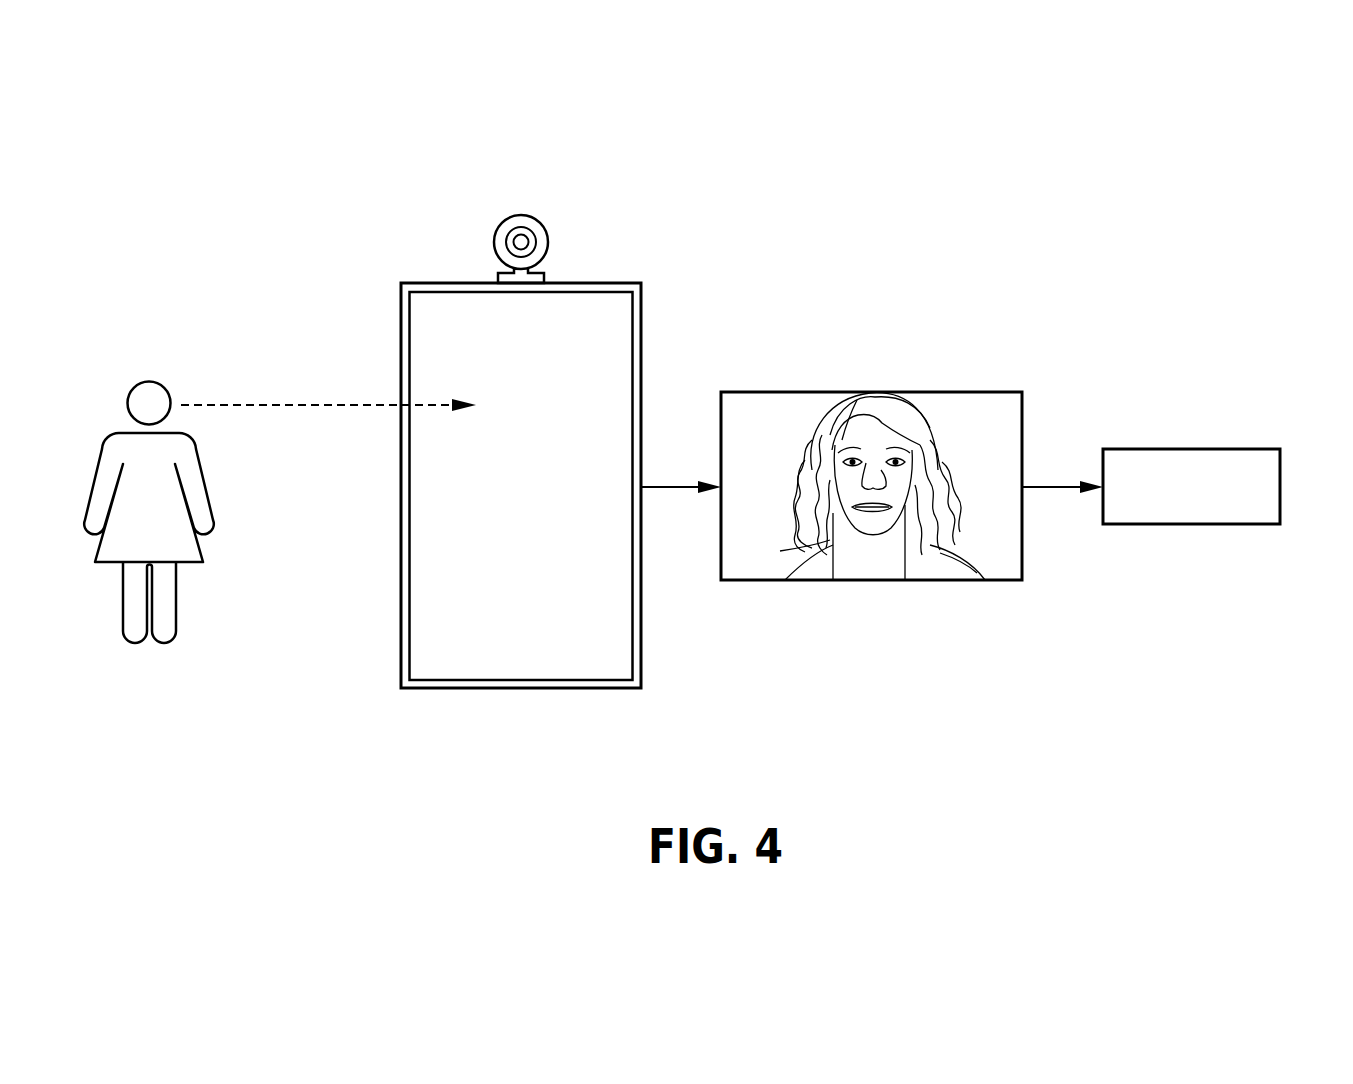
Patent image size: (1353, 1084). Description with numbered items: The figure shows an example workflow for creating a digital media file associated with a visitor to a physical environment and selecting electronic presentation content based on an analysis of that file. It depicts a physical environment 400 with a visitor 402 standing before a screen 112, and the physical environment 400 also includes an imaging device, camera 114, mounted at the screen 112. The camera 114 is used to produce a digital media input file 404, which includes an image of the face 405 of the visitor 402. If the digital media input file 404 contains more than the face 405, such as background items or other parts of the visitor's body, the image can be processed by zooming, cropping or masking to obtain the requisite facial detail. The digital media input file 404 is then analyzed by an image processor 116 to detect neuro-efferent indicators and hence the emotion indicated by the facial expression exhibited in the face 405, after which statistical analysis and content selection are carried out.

The physical environment 400 is at (182, 200).
The visitor 402 is at (148, 380).
The screen 112 is at (400, 324).
The camera 114 is at (549, 236).
The digital media input file 404 is at (792, 392).
The face 405 is at (880, 437).
The image processor 116 is at (1190, 449).